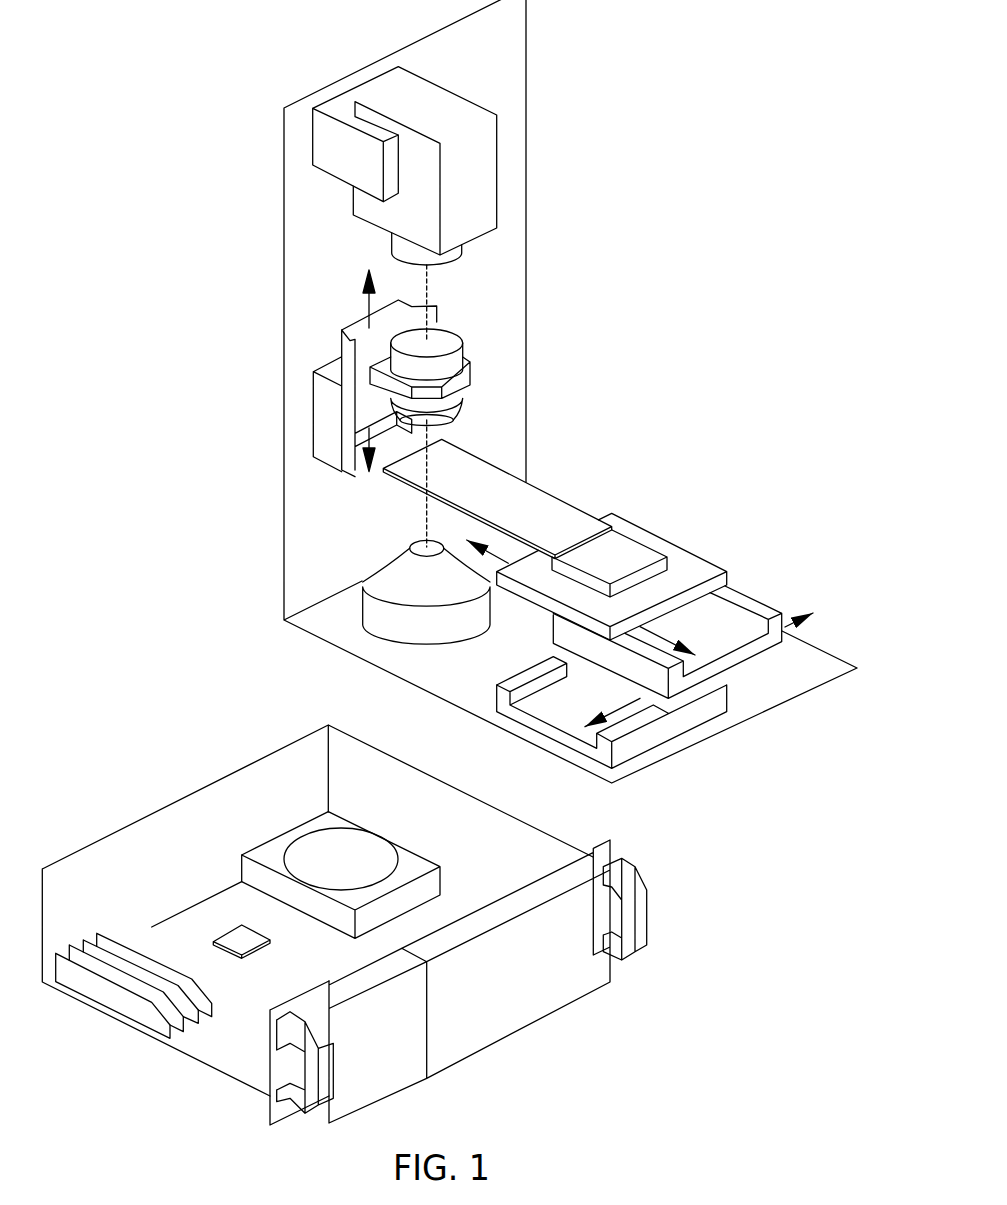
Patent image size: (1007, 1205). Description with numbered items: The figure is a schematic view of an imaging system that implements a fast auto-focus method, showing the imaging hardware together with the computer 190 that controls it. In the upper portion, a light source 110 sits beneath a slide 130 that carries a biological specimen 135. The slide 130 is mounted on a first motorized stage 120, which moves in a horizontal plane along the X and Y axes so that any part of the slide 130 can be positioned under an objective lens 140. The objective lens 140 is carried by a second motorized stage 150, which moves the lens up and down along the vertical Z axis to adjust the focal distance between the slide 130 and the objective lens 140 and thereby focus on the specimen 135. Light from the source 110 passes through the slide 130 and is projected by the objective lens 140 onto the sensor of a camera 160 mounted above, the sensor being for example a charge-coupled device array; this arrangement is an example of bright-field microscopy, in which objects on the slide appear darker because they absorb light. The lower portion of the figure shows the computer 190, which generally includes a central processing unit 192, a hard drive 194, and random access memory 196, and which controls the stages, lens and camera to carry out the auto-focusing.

The light source 110 is at (389, 554).
The first motorized stage 120 is at (728, 578).
The slide 130 is at (557, 495).
The biological specimen 135 is at (444, 465).
The objective lens 140 is at (468, 342).
The second motorized stage 150 is at (309, 393).
The camera 160 is at (500, 173).
The computer 190 is at (649, 912).
The central processing unit 192 is at (272, 940).
The hard drive 194 is at (240, 855).
The random access memory 196 is at (214, 1002).